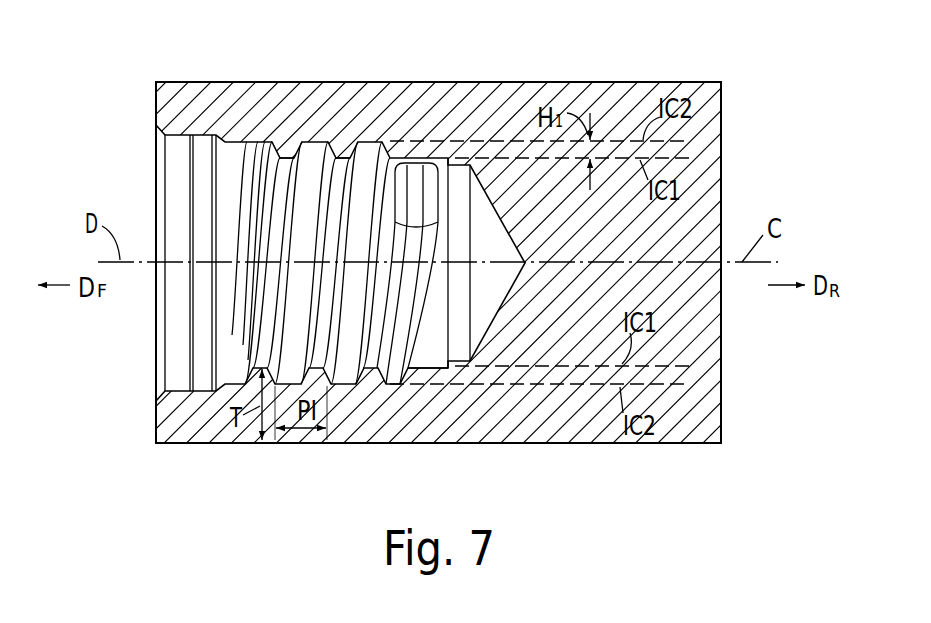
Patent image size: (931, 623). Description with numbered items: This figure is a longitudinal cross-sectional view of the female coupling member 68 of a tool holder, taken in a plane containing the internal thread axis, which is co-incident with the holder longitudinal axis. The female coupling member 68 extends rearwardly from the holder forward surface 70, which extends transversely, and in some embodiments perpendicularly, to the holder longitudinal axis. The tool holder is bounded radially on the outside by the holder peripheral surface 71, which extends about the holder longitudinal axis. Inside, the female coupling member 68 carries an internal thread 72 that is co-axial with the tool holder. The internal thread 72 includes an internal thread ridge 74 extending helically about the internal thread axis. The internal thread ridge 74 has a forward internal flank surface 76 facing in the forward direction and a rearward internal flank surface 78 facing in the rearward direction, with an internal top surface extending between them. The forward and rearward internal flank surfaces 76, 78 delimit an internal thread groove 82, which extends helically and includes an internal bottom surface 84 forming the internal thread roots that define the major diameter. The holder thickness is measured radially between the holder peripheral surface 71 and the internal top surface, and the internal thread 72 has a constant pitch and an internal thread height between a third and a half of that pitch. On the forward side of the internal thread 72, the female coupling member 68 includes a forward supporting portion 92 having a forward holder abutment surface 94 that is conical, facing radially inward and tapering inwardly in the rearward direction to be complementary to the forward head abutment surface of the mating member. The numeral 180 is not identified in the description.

The female coupling member 68 is at (128, 360).
The holder forward surface 70 is at (156, 106).
The holder peripheral surface 71 is at (581, 83).
The internal thread 72 is at (250, 213).
The internal thread ridge 74 is at (283, 150).
The forward internal flank surface 76 is at (342, 443).
The rearward internal flank surface 78 is at (410, 380).
The internal thread groove 82 is at (322, 122).
The internal bottom surface 84 is at (376, 378).
The forward supporting portion 92 is at (176, 172).
The forward holder abutment surface 94 is at (168, 148).
The thread crest 180 is at (365, 372).